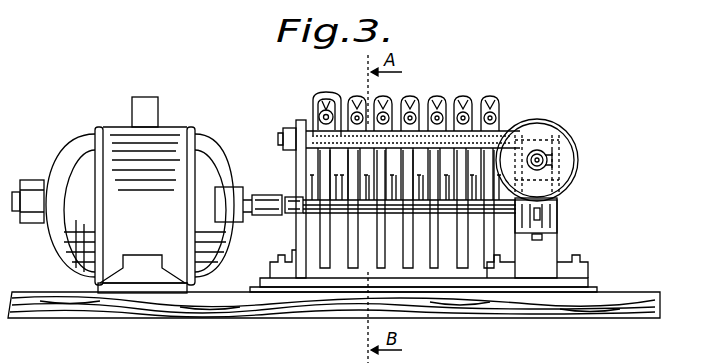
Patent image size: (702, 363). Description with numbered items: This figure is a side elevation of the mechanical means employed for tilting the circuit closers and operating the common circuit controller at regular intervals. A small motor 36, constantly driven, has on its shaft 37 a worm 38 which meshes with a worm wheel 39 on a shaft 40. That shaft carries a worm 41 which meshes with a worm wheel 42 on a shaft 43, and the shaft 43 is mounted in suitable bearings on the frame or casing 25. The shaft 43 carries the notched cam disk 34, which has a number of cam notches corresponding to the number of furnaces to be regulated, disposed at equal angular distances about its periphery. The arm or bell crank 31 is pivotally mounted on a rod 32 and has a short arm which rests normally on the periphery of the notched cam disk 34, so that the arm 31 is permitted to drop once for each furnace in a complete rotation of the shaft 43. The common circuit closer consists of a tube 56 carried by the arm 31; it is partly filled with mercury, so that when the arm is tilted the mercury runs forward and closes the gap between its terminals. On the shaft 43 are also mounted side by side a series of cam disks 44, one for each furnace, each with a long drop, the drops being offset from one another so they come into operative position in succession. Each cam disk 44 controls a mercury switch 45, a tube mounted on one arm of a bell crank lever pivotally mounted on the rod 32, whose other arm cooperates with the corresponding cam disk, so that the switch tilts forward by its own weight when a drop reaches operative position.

The frame or casing 25 is at (290, 128).
The arm or bell crank 31 is at (312, 97).
The rod 32 is at (302, 143).
The notched cam disk 34 is at (325, 268).
The small motor 36 is at (127, 195).
The shaft 37 is at (302, 222).
The worm 38 is at (558, 216).
The worm wheel 39 is at (578, 158).
The shaft 40 is at (552, 152).
The worm 41 is at (539, 154).
The worm wheel 42 is at (543, 237).
The shaft 43 is at (306, 192).
The cam disks 44 is at (489, 268).
The mercury switch 45 is at (387, 100).
The tube 56 is at (326, 96).